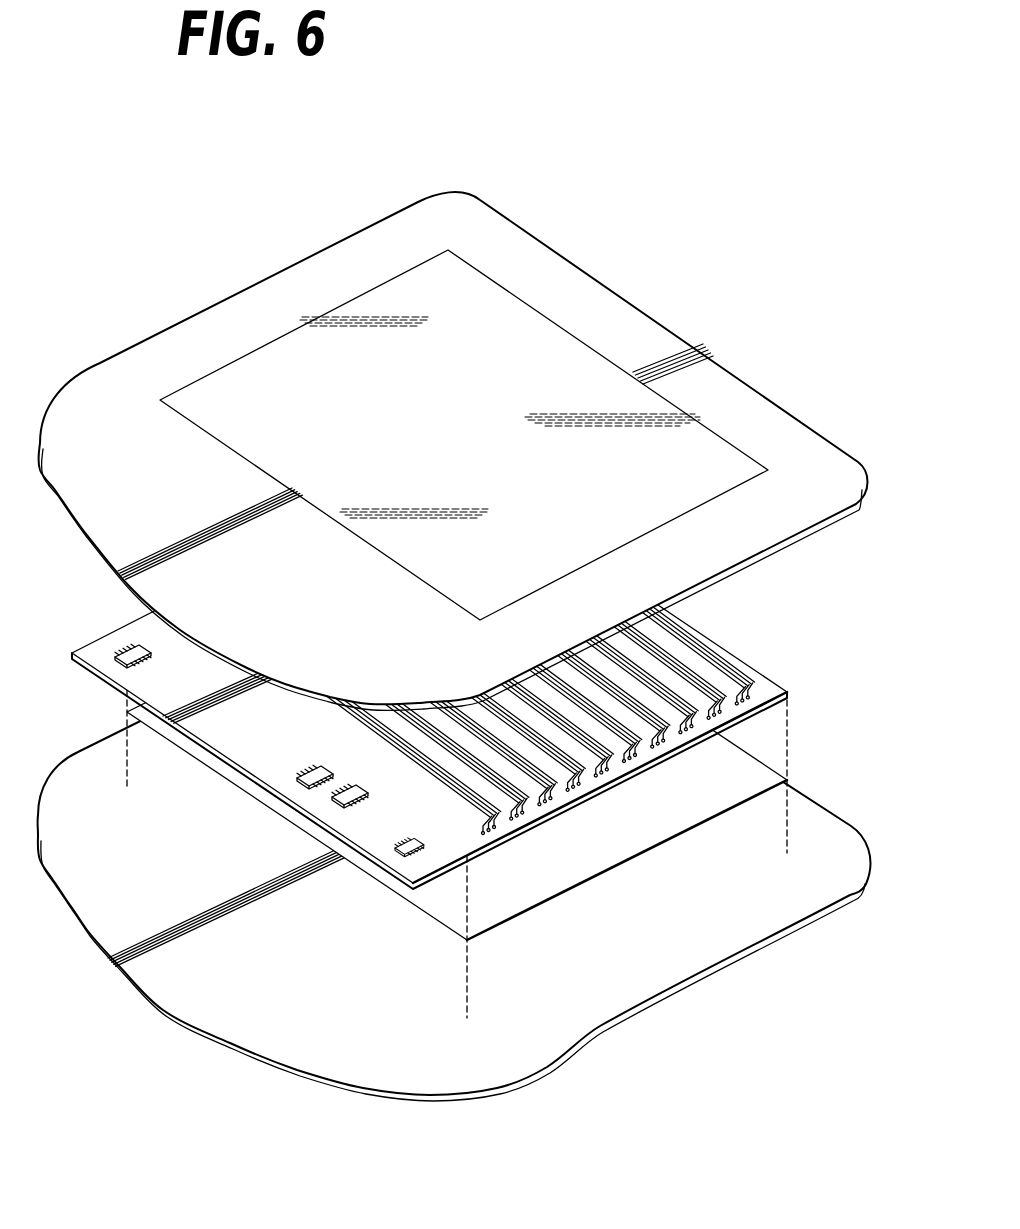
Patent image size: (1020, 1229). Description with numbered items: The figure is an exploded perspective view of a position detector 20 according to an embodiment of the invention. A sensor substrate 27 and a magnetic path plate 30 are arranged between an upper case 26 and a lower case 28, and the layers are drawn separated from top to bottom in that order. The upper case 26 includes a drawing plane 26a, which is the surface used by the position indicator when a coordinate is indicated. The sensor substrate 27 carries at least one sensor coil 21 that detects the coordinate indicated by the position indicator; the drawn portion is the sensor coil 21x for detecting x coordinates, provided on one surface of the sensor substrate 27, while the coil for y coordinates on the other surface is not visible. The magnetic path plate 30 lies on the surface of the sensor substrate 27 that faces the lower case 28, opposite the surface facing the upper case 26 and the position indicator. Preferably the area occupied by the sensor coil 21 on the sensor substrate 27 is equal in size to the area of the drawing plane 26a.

The position detector 20 is at (468, 646).
The upper case 26 is at (468, 451).
The drawing plane 26a is at (713, 508).
The sensor coil 21 is at (559, 686).
The sensor coil for detecting x coordinates 21x is at (702, 642).
The sensor substrate 27 is at (477, 675).
The lower case 28 is at (773, 945).
The magnetic path plate 30 is at (615, 905).